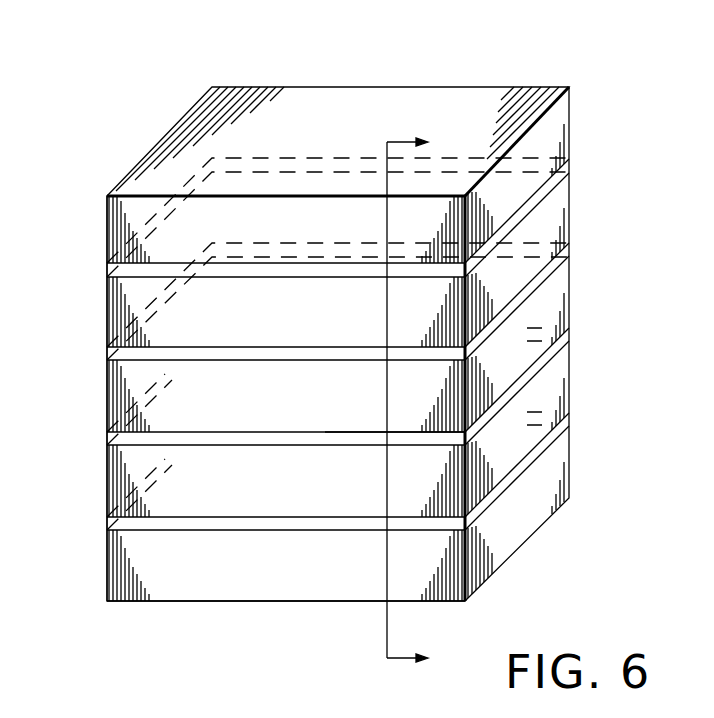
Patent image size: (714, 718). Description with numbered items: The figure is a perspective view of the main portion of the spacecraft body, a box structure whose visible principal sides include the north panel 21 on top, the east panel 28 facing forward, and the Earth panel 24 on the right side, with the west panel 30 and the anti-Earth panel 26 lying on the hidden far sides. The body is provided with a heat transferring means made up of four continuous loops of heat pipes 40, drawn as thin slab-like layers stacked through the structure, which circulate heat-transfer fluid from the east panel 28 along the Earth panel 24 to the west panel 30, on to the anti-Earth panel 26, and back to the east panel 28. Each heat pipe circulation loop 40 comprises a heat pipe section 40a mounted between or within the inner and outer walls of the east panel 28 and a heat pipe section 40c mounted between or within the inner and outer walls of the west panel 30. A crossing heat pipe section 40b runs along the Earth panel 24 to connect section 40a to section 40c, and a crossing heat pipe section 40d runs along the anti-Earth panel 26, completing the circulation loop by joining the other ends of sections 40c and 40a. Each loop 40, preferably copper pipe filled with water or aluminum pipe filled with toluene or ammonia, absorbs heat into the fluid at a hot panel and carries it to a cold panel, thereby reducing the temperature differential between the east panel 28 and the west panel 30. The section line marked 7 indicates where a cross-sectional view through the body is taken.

The north panel 21 is at (282, 108).
The west panel 30 is at (468, 87).
The anti-Earth panel 26 is at (162, 137).
The Earth panel 24 is at (538, 523).
The east panel 28 is at (247, 599).
The heat pipe loop 40 is at (104, 271).
The heat pipe section 40a is at (325, 432).
The crossing heat pipe section 40b is at (520, 393).
The heat pipe section 40c is at (530, 322).
The crossing heat pipe section 40d is at (143, 415).
The section line 7- 7 is at (408, 399).